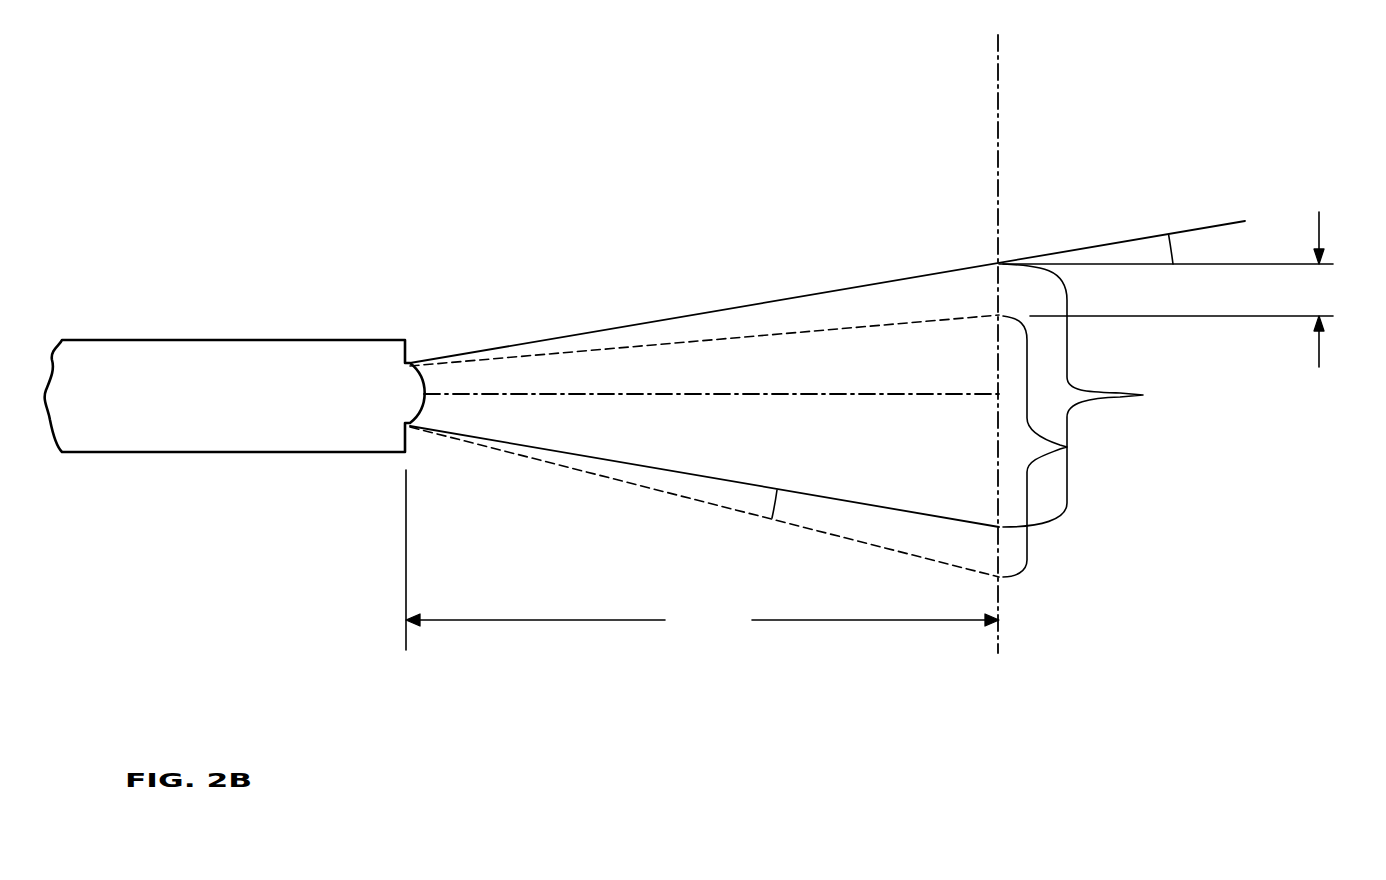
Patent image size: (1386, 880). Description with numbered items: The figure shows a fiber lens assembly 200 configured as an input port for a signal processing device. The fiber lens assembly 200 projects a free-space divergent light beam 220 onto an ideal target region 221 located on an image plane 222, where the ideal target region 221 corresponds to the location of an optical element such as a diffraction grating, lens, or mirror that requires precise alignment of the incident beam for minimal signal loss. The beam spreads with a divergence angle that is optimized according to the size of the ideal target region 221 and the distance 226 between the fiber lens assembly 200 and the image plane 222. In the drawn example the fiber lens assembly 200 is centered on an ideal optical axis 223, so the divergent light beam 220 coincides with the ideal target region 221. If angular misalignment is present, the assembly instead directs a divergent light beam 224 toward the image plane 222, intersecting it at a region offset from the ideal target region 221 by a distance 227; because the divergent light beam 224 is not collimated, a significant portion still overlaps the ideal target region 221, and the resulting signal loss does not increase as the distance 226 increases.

The fiber lens assembly 200 is at (217, 257).
The divergent light beam 220 is at (768, 303).
The ideal target region 221 is at (1143, 395).
The image plane 222 is at (998, 175).
The ideal optical axis 223 is at (740, 394).
The divergent light beam 224 is at (712, 505).
The distance 226 is at (1067, 447).
The distance 227 is at (1319, 350).